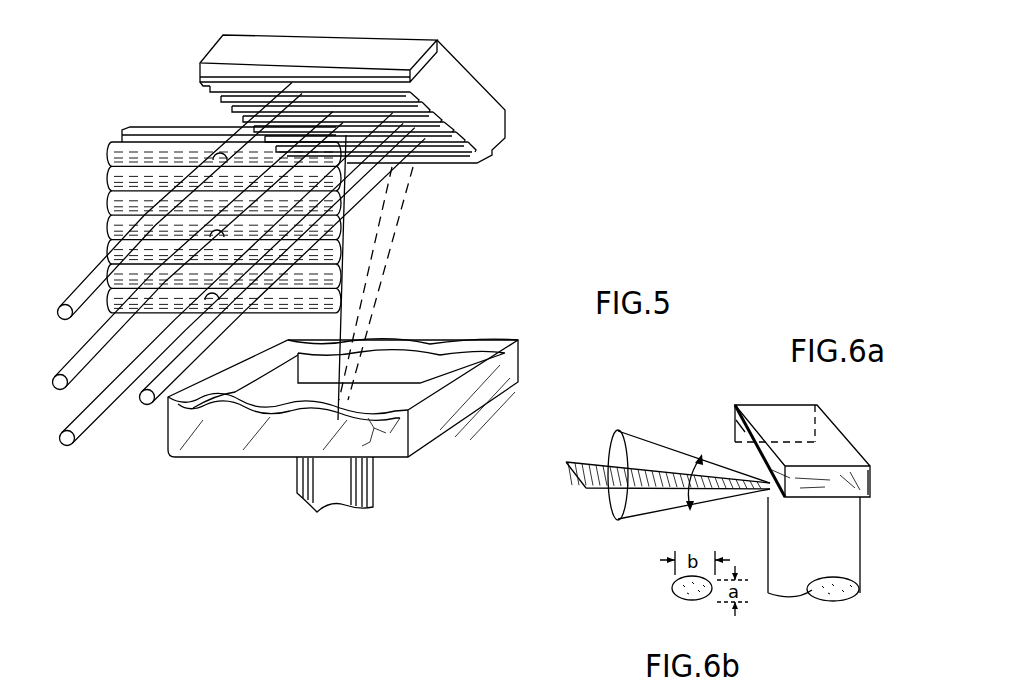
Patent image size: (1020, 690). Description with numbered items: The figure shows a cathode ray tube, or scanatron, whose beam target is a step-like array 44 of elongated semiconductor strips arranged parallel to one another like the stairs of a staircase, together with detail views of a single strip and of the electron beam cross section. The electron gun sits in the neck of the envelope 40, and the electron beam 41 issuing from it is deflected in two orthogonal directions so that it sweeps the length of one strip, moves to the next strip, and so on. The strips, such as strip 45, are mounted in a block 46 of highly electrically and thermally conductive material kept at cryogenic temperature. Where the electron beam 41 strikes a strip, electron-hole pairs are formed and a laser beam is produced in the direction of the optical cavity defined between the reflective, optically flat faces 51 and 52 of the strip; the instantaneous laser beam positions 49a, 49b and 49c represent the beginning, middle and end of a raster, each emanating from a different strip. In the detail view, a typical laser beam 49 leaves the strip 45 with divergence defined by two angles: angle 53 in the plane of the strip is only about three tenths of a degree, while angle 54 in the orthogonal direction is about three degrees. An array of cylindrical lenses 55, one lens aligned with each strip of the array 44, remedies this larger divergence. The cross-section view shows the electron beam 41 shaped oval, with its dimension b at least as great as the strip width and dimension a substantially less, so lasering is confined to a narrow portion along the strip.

In FIG. 5, the envelope 40 is at (478, 340).
In FIG. 6A, the electron beam 41 is at (860, 543).
In FIG. 6B, the electron beam 41 is at (675, 597).
In FIG. 5, the array of semiconductor strips 44 is at (395, 180).
In FIG. 5, the semiconductor strip 45 is at (223, 86).
In FIG. 6A, the semiconductor strip 45 is at (777, 399).
In FIG. 5, the block 46 is at (413, 43).
In FIG. 6A, the laser beam 49 is at (631, 425).
In FIG. 5, the laser beam position 49a is at (83, 284).
In FIG. 5, the laser beam position 49b is at (66, 373).
In FIG. 5, the laser beam position 49c is at (80, 414).
In FIG. 6A, the reflective optically flat face 51 is at (740, 430).
In FIG. 6A, the reflective optically flat face 52 is at (879, 477).
In FIG. 6A, the divergence angle in plane of strip 53 is at (569, 466).
In FIG. 6A, the divergence angle orthogonal to strip 54 is at (700, 458).
In FIG. 5, the array of cylindrical lenses 55 is at (108, 173).